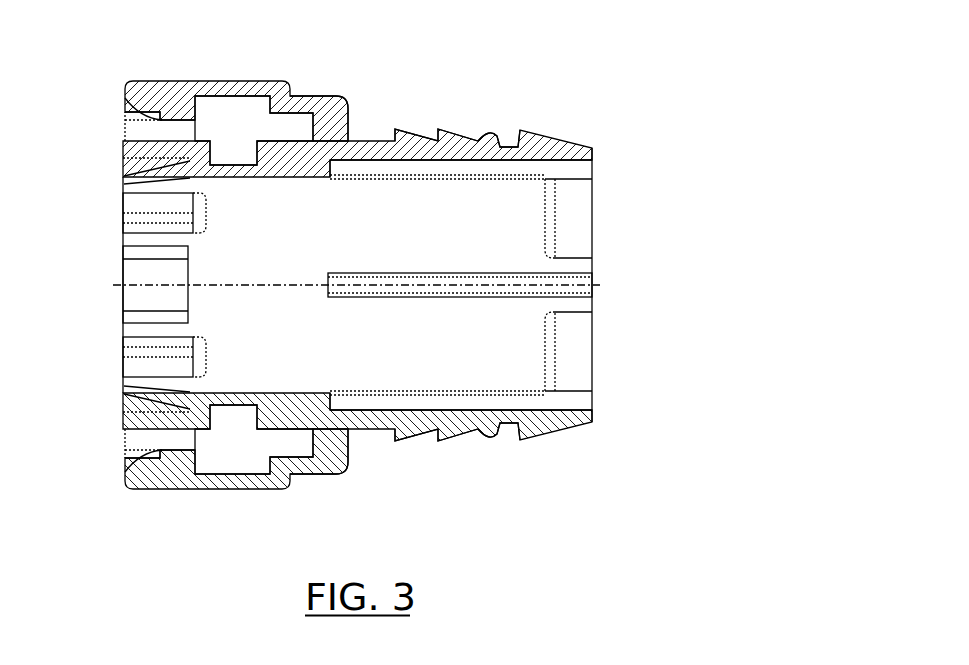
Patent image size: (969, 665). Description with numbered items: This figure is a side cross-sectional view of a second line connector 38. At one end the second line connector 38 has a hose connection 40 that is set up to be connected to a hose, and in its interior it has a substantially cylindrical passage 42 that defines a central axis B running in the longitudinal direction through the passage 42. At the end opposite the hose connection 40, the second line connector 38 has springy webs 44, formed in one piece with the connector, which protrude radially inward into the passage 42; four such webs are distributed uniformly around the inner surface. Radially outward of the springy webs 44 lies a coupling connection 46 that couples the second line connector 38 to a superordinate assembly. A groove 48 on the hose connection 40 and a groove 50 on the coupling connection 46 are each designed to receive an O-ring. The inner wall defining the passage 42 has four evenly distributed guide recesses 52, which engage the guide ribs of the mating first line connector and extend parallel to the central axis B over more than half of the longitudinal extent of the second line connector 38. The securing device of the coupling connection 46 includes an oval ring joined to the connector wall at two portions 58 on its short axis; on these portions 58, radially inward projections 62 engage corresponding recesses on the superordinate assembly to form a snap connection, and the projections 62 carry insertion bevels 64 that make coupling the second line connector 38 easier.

The second line connector 38 is at (648, 66).
The hose connection 40 is at (481, 142).
The passage 42 is at (352, 220).
The springy webs 44 is at (128, 178).
The coupling connection 46 is at (168, 140).
The groove 48 is at (508, 141).
The groove 50 is at (228, 147).
The guide recesses 52 is at (573, 400).
The portions of the oval ring 58 is at (317, 106).
The projections 62 is at (172, 93).
The insertion bevels 64 is at (125, 98).
The central axis B is at (593, 283).